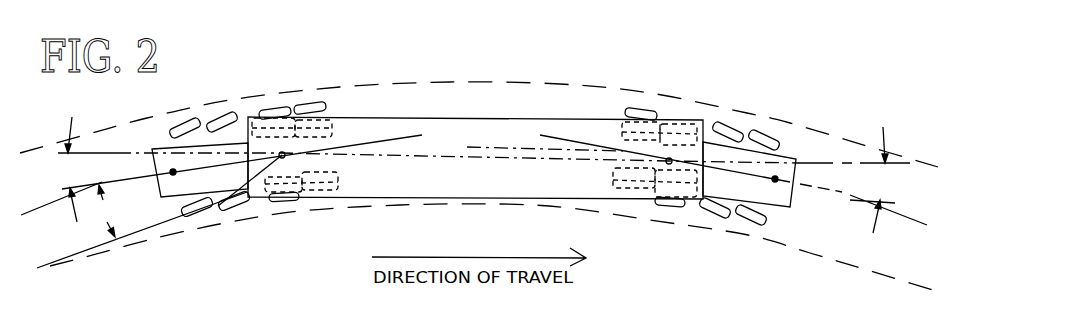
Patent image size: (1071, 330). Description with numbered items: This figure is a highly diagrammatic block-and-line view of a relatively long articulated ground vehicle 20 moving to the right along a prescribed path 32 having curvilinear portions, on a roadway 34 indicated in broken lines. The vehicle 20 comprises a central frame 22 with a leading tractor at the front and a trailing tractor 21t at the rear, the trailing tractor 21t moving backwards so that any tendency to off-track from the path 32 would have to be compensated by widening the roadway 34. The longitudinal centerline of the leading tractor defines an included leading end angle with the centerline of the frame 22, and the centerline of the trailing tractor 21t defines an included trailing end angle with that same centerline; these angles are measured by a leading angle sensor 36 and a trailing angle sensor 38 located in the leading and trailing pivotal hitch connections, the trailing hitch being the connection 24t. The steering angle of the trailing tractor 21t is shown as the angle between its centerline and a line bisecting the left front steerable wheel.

The articulated ground vehicle 20 is at (630, 86).
The frame 22 is at (546, 190).
The trailing pivotal hitch connection 24t is at (283, 152).
The trailing angle sensor 38 is at (326, 124).
The leading angle sensor 36 is at (700, 142).
The trailing tractor 21t is at (240, 211).
The prescribed path 32 is at (58, 210).
The roadway 34 is at (860, 264).